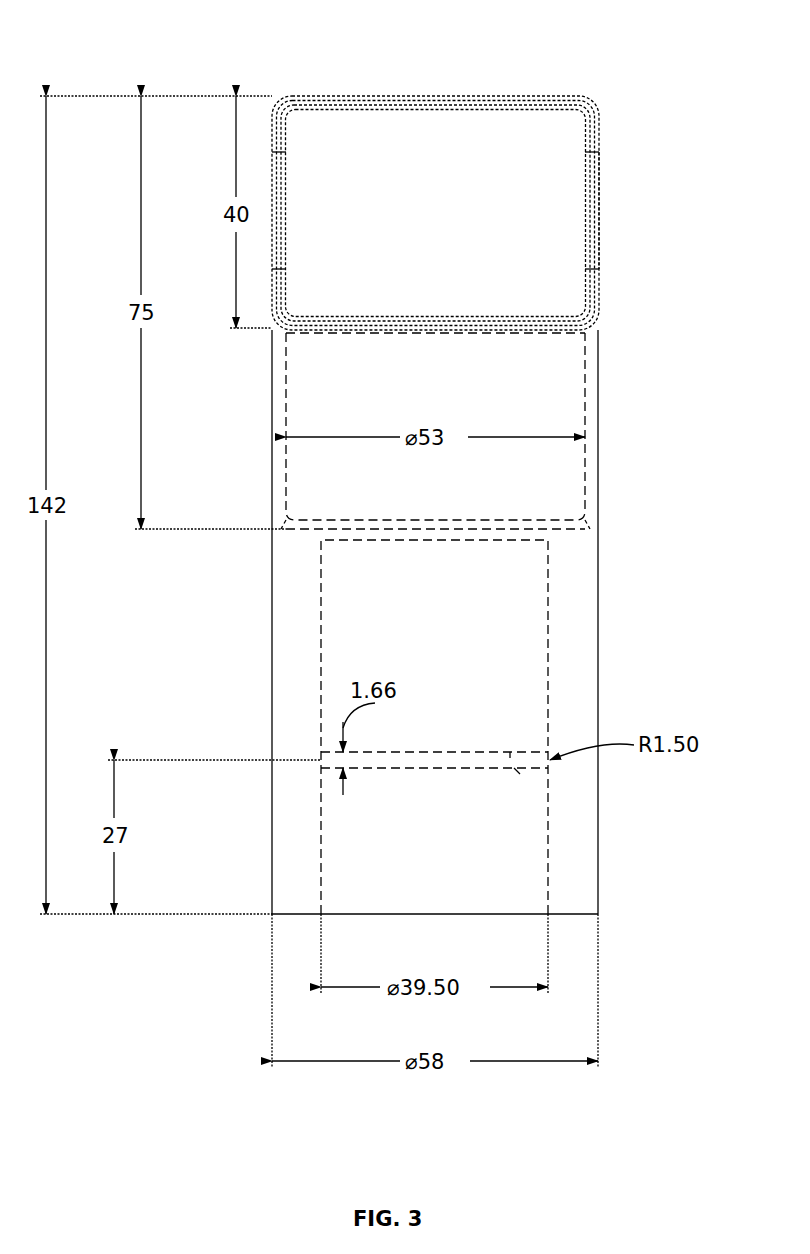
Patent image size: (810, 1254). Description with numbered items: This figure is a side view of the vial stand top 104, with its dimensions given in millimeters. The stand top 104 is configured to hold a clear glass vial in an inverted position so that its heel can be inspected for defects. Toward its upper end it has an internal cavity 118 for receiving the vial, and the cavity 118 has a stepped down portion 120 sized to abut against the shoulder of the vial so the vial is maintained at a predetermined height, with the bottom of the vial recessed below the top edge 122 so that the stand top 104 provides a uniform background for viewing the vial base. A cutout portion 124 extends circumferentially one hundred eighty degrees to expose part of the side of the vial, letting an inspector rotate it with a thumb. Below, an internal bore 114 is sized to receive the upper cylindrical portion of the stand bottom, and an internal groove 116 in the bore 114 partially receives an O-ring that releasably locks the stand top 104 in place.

The vial stand top 104 is at (622, 66).
The top edge 122 is at (433, 96).
The cutout portion 124 is at (590, 211).
The internal cavity 118 is at (547, 375).
The stepped down portion 120 is at (553, 537).
The internal bore 114 is at (548, 675).
The internal groove 116 is at (548, 800).